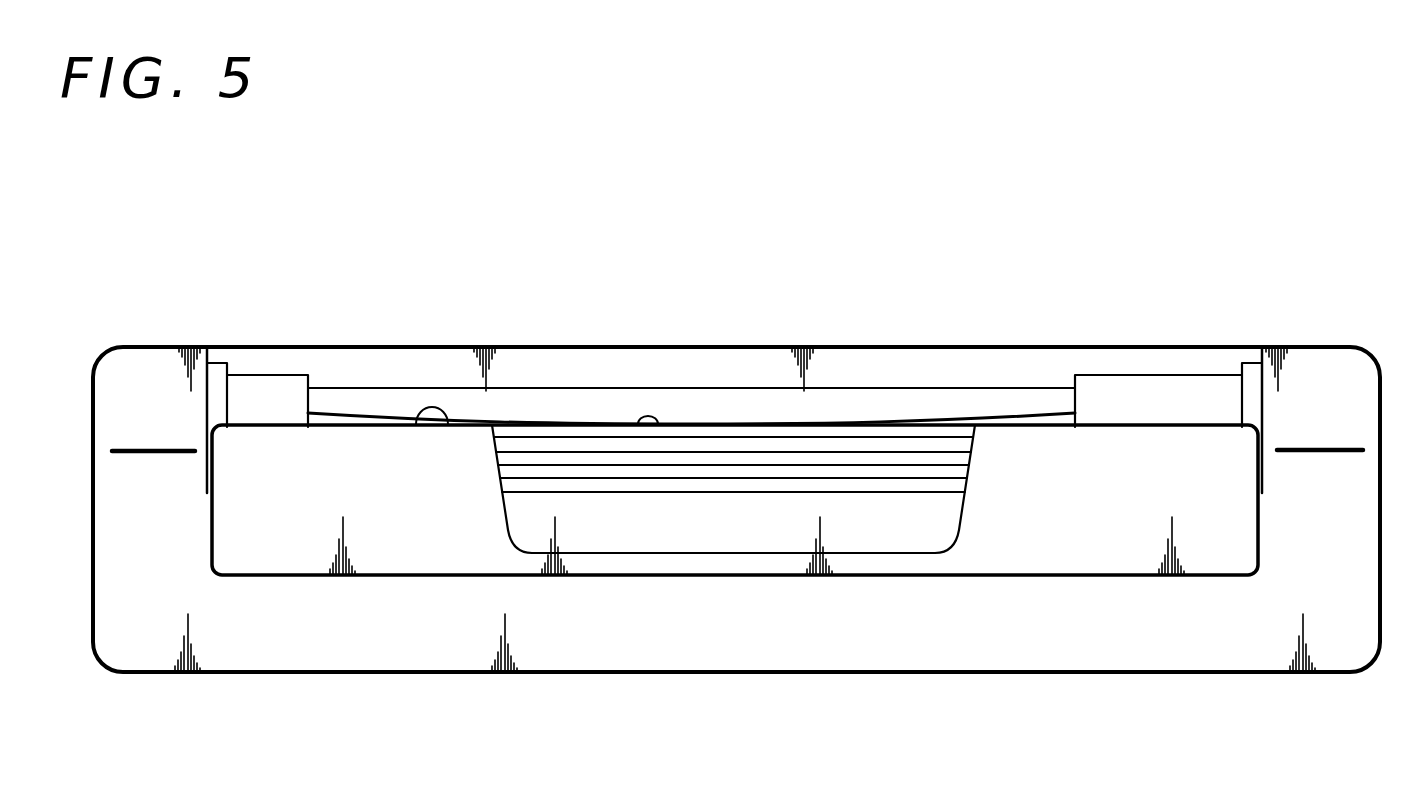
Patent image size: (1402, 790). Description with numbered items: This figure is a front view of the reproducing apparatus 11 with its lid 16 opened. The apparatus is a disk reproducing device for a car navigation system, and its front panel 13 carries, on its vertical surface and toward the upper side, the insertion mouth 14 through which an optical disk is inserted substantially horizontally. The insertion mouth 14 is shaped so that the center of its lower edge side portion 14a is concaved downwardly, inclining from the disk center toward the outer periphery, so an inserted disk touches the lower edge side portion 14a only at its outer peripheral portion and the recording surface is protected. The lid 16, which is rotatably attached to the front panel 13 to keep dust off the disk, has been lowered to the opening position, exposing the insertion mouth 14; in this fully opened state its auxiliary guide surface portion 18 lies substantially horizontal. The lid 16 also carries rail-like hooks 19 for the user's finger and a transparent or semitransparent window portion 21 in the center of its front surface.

The reproducing apparatus 11 is at (742, 300).
The front panel 13 is at (882, 647).
The insertion mouth 14 is at (678, 400).
The lower edge side portion 14a is at (452, 427).
The lid 16 is at (1012, 510).
The auxiliary guide surface portion 18 is at (627, 427).
The hooks 19 is at (785, 465).
The window portion 21 is at (697, 523).